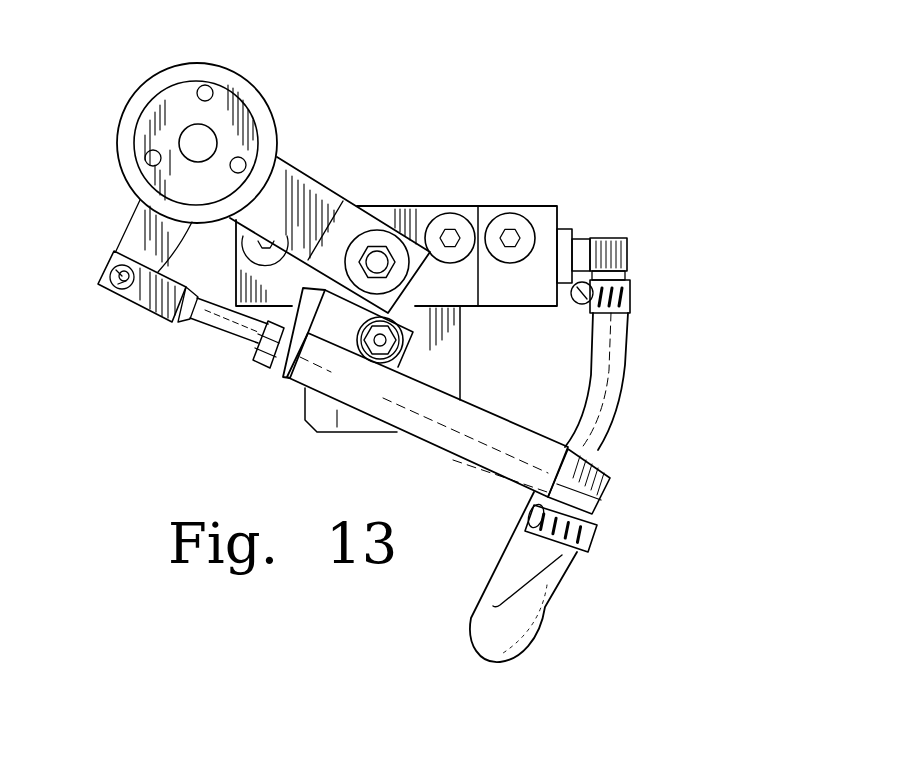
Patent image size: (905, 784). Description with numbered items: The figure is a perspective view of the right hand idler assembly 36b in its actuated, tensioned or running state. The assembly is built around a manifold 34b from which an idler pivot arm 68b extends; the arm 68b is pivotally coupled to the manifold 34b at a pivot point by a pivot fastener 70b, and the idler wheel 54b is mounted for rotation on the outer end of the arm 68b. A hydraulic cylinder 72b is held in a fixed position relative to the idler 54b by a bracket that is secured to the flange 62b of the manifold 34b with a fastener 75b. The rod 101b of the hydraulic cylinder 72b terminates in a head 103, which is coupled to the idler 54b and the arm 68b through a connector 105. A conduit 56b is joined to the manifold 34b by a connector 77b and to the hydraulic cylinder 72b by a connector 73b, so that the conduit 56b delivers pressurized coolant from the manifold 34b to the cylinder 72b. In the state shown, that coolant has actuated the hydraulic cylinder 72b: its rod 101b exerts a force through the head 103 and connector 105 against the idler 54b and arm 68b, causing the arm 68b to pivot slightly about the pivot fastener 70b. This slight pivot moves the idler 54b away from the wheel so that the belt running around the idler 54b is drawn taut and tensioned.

The idler assembly 36b is at (578, 112).
The idler wheel 54b is at (178, 92).
The idler pivot arm 68b is at (320, 183).
The pivot fastener 70b is at (376, 258).
The manifold 34b is at (487, 206).
The connector 77b is at (574, 233).
The conduit 56b is at (596, 436).
The connector 73b is at (610, 480).
The hydraulic cylinder 72b is at (513, 432).
The fastener 75b is at (404, 360).
The flange 62b is at (333, 325).
The rod 101b is at (213, 330).
The head 103 is at (133, 300).
The connector 105 is at (122, 243).